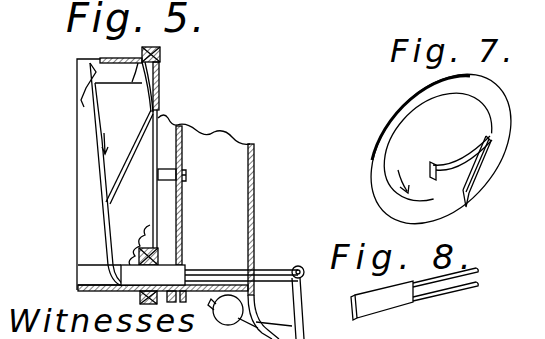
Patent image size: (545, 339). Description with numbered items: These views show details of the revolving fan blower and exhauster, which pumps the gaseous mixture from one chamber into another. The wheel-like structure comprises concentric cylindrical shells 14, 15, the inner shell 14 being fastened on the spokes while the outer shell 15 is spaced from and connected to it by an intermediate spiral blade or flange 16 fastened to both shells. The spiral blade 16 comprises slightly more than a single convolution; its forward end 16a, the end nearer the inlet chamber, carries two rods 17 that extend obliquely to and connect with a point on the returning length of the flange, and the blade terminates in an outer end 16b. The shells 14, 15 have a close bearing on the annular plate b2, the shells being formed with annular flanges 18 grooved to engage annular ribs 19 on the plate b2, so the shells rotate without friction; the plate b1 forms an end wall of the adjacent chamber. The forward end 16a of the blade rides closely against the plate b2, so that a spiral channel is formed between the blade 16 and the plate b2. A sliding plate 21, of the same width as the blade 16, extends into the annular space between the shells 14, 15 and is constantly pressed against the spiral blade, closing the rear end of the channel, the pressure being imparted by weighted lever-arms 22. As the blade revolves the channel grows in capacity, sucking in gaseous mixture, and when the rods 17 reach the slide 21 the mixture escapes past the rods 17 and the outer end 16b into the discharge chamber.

In FIG. 5, the inner cylindrical shell 14 is at (90, 232).
In FIG. 5, the outer cylindrical shell 15 is at (110, 58).
In FIG. 5, the spiral blade or flange 16 is at (93, 163).
In FIG. 7, the spiral blade or flange 16 is at (395, 115).
In FIG. 5, the forward end of spiral blade 16a is at (158, 112).
In FIG. 7, the forward end of spiral blade 16a is at (467, 205).
In FIG. 7, the outer end of spiral blade 16b is at (437, 162).
In FIG. 5, the oblique rods 17 is at (172, 127).
In FIG. 7, the oblique rods 17 is at (476, 170).
In FIG. 5, the annular flanges 18 is at (160, 47).
In FIG. 5, the annular ribs 19 is at (161, 58).
In FIG. 5, the sliding plate 21 is at (212, 276).
In FIG. 8, the sliding plate 21 is at (414, 297).
In FIG. 5, the weighted lever-arms 22 is at (297, 322).
In FIG. 5, the plate b1 is at (185, 155).
In FIG. 5, the annular plate b2 is at (162, 77).